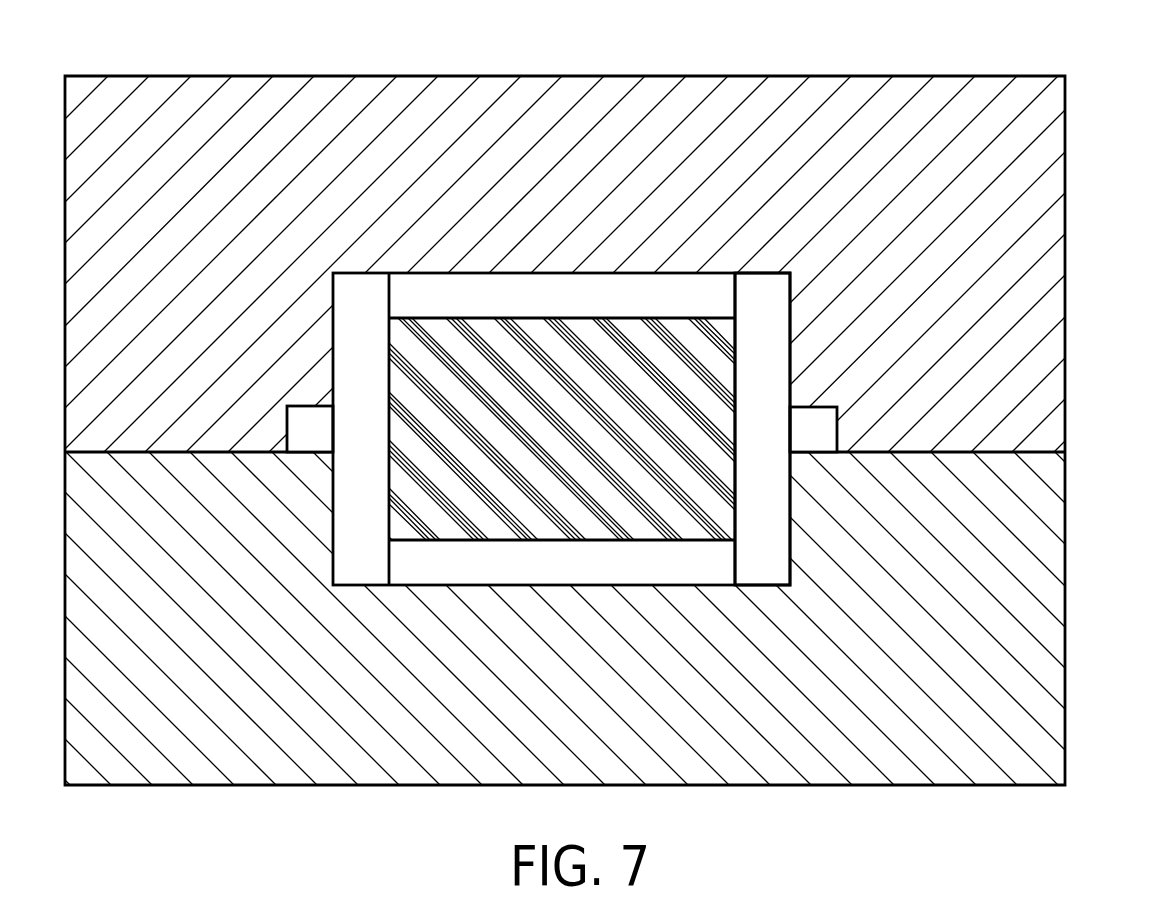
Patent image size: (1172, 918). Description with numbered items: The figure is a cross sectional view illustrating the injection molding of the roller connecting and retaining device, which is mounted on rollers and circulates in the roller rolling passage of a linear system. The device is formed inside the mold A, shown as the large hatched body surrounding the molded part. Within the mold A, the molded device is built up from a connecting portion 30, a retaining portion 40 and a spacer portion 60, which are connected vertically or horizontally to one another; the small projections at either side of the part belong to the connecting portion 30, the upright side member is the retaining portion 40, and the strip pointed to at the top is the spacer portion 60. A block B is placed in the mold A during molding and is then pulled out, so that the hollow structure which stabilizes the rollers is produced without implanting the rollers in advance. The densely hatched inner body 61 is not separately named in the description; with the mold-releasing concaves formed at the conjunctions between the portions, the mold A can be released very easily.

The connecting portion 30 is at (707, 448).
The retaining portion 40 is at (767, 335).
The spacer portion 60 is at (487, 290).
The hatched core body 61 is at (632, 318).
The mold A is at (1048, 312).
The block B is at (1065, 695).